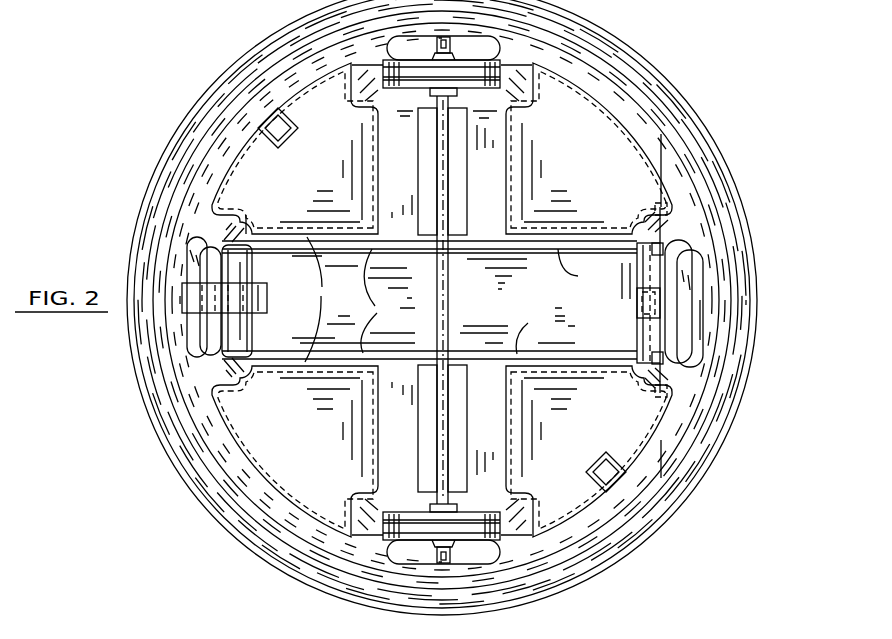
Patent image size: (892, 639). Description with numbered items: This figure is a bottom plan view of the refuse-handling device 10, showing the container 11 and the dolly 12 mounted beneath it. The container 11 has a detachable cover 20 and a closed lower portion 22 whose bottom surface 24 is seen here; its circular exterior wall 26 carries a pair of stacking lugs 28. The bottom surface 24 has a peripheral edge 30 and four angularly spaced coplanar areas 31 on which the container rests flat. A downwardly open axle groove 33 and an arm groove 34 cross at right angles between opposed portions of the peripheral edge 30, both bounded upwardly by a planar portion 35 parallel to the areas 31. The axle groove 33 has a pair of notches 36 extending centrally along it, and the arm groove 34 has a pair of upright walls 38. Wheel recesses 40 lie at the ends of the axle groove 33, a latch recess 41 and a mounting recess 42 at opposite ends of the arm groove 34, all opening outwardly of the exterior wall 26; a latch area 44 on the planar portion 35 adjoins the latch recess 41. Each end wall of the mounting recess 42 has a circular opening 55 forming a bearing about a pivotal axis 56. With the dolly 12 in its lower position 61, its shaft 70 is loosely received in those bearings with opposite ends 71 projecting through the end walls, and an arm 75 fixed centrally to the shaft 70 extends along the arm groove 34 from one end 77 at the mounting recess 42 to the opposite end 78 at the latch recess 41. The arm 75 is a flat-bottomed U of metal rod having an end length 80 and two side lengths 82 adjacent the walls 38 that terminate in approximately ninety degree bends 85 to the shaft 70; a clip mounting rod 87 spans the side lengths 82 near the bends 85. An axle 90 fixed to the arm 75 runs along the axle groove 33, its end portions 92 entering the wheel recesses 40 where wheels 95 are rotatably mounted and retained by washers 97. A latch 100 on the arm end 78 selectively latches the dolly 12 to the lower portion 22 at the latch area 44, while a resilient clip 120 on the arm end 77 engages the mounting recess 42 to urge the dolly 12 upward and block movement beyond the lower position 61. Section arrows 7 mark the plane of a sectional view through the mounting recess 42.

The section line 7- 7 is at (665, 150).
The device 10 is at (165, 62).
The container 11 is at (668, 75).
The dolly 12 is at (481, 237).
The detachable cover 20 is at (288, 36).
The lower portion 22 is at (587, 71).
The bottom surface 24 is at (248, 433).
The exterior wall 26 is at (236, 157).
The stacking lugs 28 is at (298, 135).
The peripheral edge 30 is at (633, 132).
The coplanar areas 31 is at (337, 181).
The axle groove 33 is at (497, 105).
The arm groove 34 is at (275, 262).
The planar portion 35 is at (535, 301).
The notches 36 is at (420, 175).
The upright walls 38 is at (353, 299).
The wheel recesses 40 is at (370, 60).
The latch recess 41 is at (217, 230).
The mounting recess 42 is at (677, 363).
The latch area 44 is at (266, 296).
The circular opening 55 is at (664, 217).
The pivotal axis 56 is at (640, 223).
The lower position 61 is at (217, 365).
The shaft 70 is at (652, 378).
The opposite ends 71 is at (653, 207).
The arm 75 is at (199, 338).
The end 77 is at (262, 271).
The opposite end 78 is at (622, 249).
The end length 80 is at (222, 270).
The side lengths 82 is at (479, 301).
The bend 85 is at (664, 250).
The clip mounting rod 87 is at (640, 336).
The axle 90 is at (452, 311).
The end portions 92 is at (443, 187).
The wheels 95 is at (471, 56).
The washers 97 is at (388, 70).
The latch 100 is at (183, 313).
The resilient clip 120 is at (632, 306).